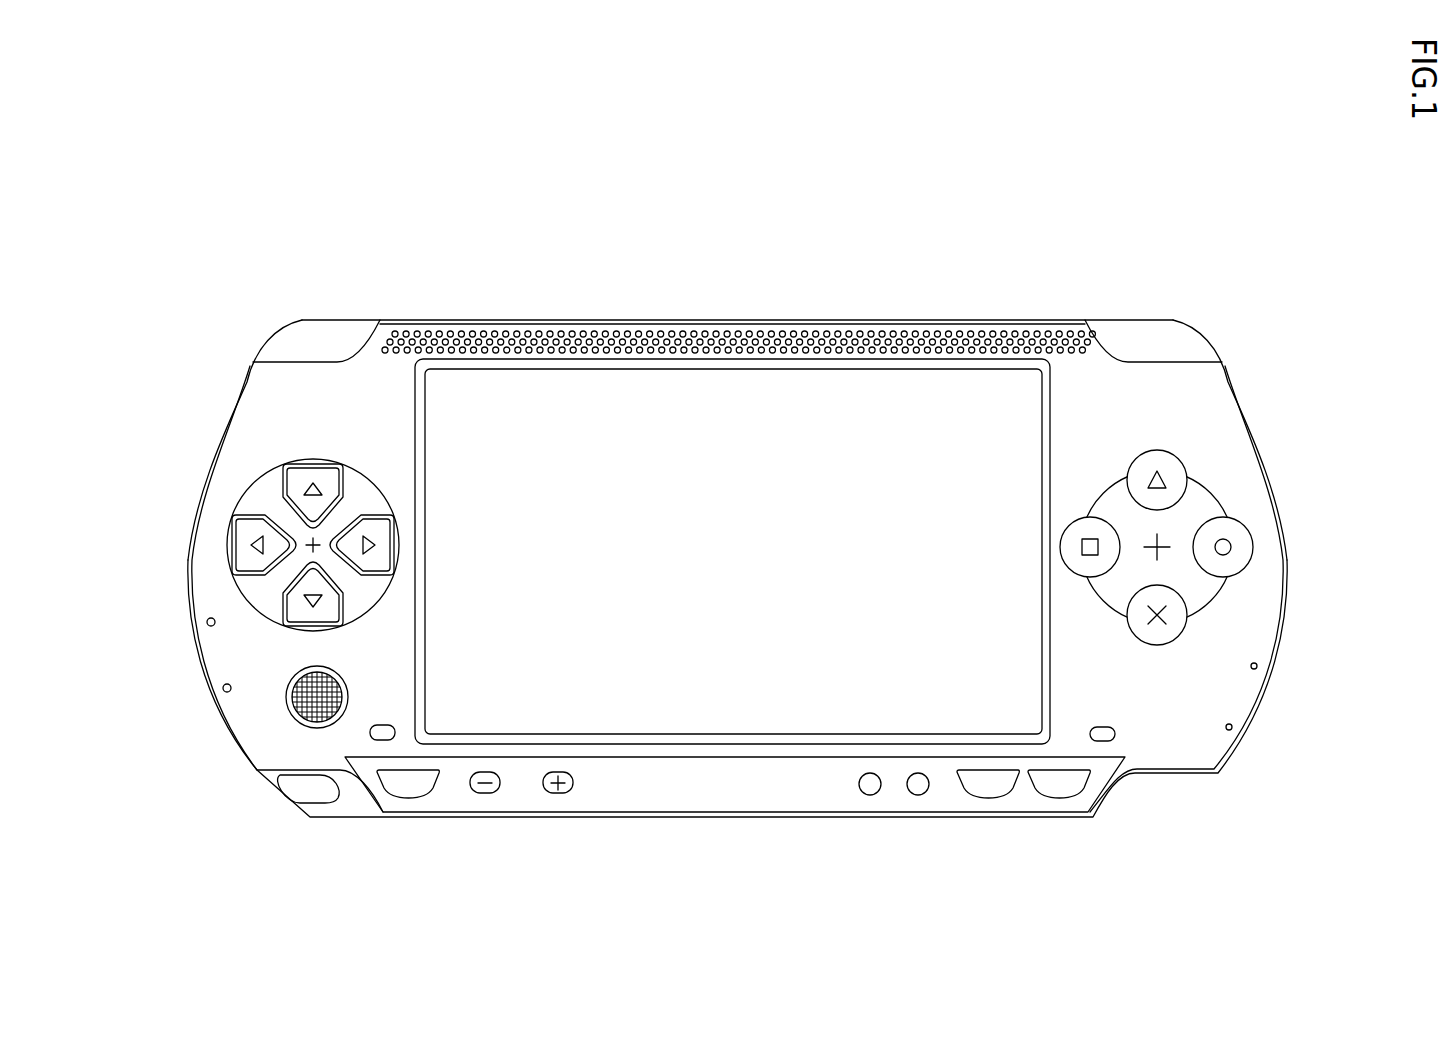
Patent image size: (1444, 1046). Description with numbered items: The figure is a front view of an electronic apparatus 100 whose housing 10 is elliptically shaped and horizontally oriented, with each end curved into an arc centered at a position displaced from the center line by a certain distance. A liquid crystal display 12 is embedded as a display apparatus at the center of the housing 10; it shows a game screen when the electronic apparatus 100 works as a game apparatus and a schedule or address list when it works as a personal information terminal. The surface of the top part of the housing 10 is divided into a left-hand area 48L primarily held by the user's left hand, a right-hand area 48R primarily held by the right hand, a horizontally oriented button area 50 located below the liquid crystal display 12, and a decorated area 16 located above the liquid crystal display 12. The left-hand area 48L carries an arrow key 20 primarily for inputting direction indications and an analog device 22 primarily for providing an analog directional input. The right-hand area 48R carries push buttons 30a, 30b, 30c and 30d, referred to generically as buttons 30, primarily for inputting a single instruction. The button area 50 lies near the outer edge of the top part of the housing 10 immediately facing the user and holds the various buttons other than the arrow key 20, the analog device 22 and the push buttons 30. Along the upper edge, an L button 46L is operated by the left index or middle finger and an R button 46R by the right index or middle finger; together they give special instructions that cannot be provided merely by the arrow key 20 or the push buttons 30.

The electronic apparatus 100 is at (1172, 186).
The housing 10 is at (1222, 402).
The liquid crystal display 12 is at (912, 392).
The decorated area 16 is at (447, 337).
The arrow key 20 is at (257, 590).
The analog device 22 is at (285, 705).
The buttons 30 is at (1210, 529).
The push button 30a is at (1240, 527).
The push button 30b is at (1157, 453).
The push button 30c is at (1075, 527).
The push button 30d is at (1137, 622).
The L button 46L is at (340, 330).
The R button 46R is at (1152, 337).
The left-hand area 48L is at (252, 398).
The right-hand area 48R is at (1090, 369).
The button area 50 is at (737, 800).